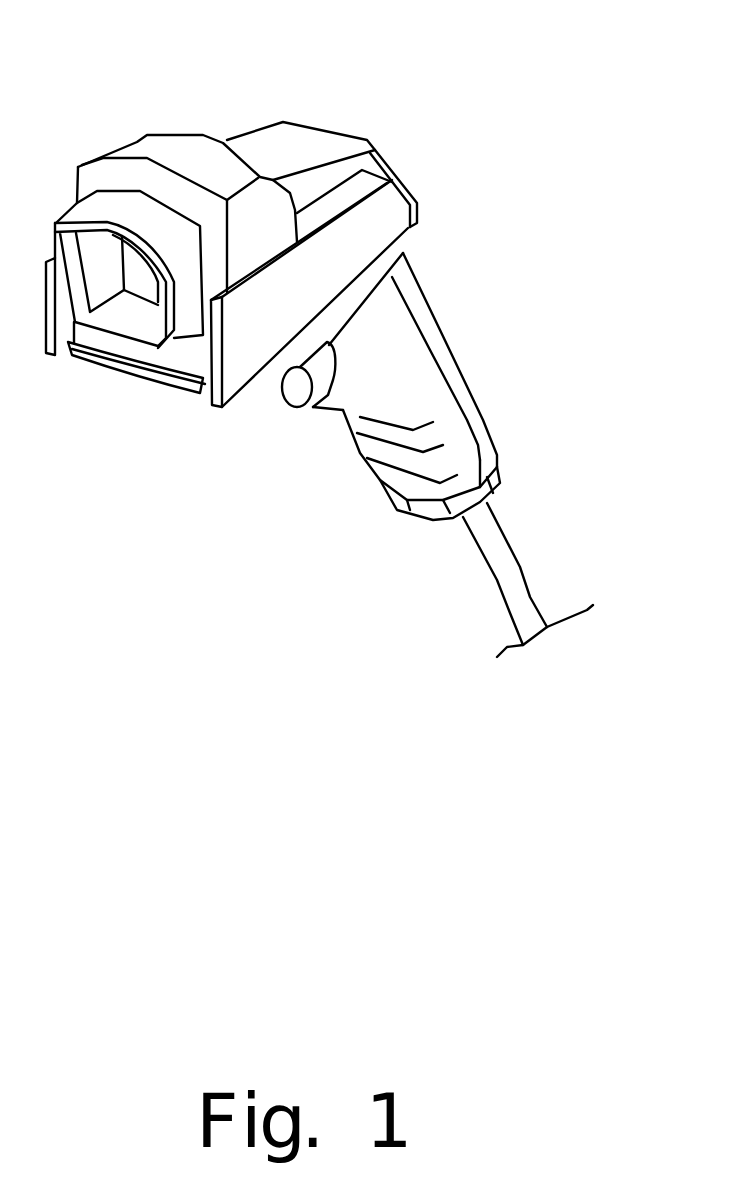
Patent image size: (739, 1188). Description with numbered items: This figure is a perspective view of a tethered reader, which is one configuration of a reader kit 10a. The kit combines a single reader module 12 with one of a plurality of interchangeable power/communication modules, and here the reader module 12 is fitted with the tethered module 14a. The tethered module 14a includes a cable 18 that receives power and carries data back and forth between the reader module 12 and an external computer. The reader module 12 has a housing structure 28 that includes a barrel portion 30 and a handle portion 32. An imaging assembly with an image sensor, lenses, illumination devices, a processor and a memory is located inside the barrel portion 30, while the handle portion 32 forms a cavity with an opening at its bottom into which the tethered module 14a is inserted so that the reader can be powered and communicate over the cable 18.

The reader kit 10a is at (293, 76).
The reader module 12 is at (137, 146).
The tethered module 14a is at (503, 468).
The cable 18 is at (510, 587).
The housing structure 28 is at (245, 143).
The barrel portion 30 is at (207, 402).
The handle portion 32 is at (393, 405).